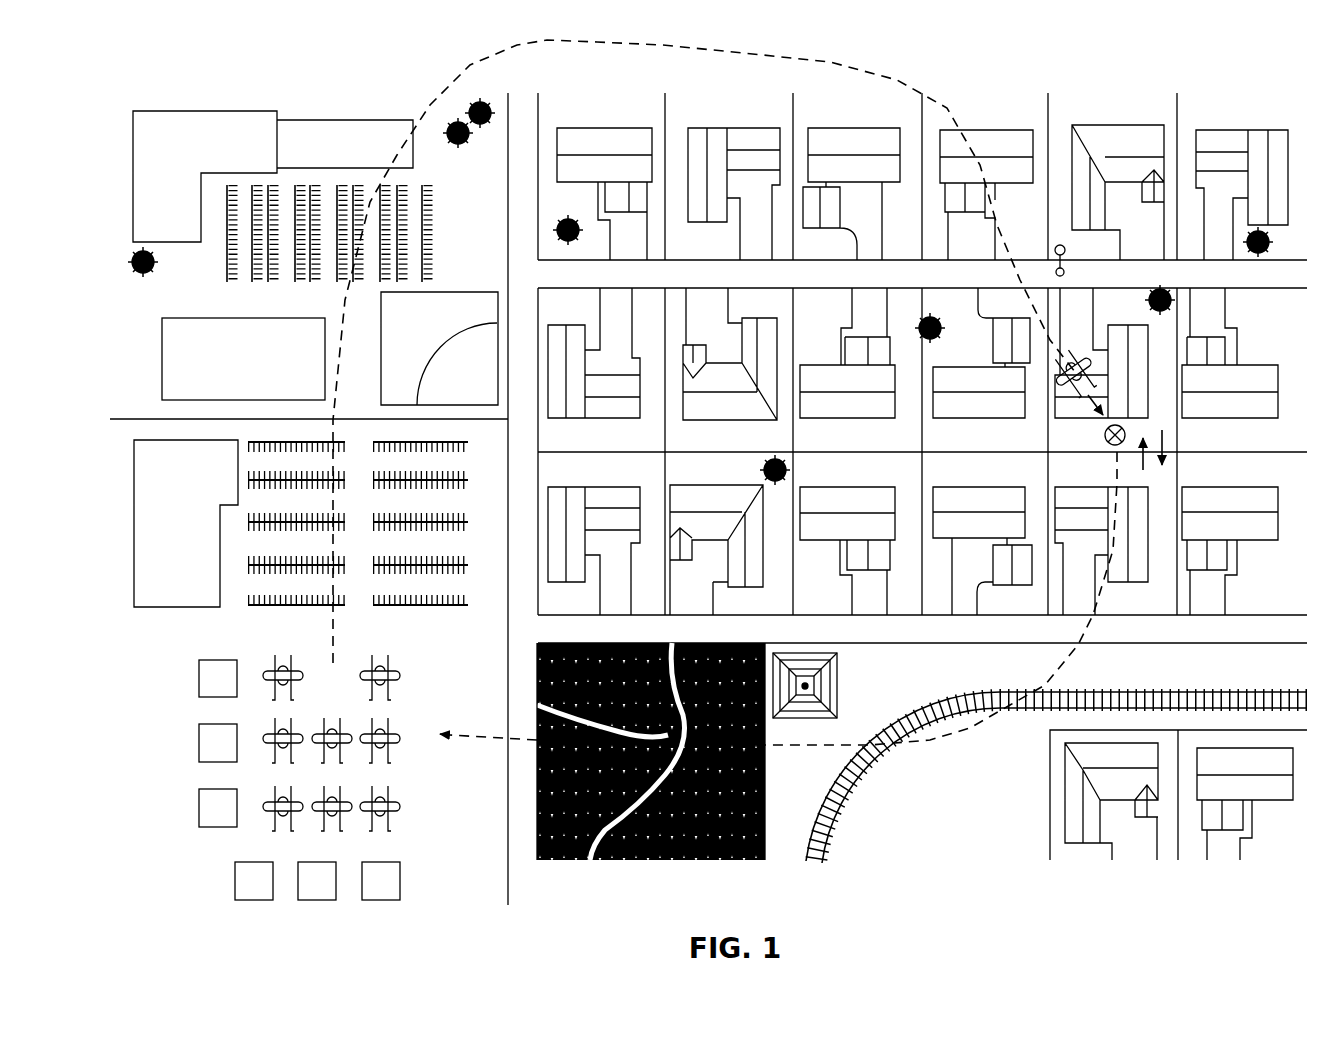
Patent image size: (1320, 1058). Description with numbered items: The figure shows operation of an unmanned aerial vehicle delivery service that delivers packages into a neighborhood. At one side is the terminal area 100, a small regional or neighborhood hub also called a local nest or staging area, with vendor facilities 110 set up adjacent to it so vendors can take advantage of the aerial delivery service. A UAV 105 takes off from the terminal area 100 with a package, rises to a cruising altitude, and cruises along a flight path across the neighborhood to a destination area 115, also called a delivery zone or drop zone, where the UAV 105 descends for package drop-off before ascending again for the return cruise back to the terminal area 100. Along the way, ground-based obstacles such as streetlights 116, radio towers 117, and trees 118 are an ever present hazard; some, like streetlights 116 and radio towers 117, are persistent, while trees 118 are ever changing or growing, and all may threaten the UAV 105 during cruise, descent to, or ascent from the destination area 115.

The terminal area 100 is at (708, 496).
The UAV 105 is at (398, 676).
The vendor facilities 110 is at (199, 740).
The destination area 115 is at (1105, 444).
The streetlights 116 is at (1048, 236).
The radio towers 117 is at (840, 680).
The trees 118 is at (612, 870).